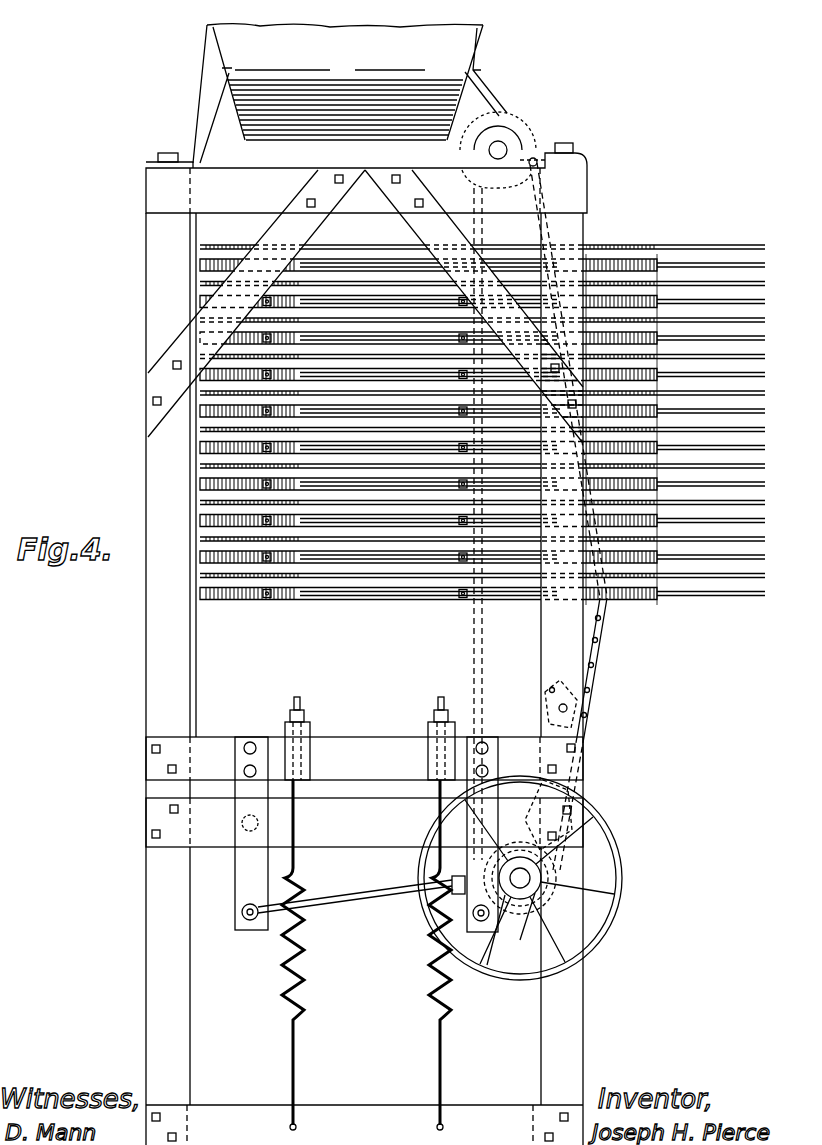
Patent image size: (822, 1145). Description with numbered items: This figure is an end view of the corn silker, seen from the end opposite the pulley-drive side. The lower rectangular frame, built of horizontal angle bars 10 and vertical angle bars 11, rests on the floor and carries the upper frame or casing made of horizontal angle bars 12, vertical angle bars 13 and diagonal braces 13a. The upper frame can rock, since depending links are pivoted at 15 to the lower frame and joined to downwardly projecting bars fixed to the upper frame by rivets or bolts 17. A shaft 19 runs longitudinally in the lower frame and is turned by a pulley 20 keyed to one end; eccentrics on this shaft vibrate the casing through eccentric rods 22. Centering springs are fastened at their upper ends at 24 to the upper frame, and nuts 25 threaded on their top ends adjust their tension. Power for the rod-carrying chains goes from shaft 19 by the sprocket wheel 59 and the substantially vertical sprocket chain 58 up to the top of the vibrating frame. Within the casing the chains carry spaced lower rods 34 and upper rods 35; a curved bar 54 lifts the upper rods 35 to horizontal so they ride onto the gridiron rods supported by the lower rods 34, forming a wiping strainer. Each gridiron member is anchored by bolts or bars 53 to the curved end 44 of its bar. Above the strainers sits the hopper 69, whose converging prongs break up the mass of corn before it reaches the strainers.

The hopper 69 is at (230, 60).
The curved end of bar 44 is at (518, 290).
The horizontal angle bars 12 is at (366, 461).
The vertical angle bars 13 is at (364, 475).
The braces 13a is at (365, 306).
The curved bar 54 is at (358, 258).
The upper rods 35 is at (706, 590).
The lower rods 34 is at (733, 586).
The bolts or bars 53 is at (270, 603).
The sprocket chain 58 is at (598, 630).
The horizontal angle bars 10 is at (364, 971).
The vertical angle bars 11 is at (364, 941).
The spring upper fastening 24 is at (310, 722).
The nuts 25 is at (303, 716).
The rivets or bolts 17 is at (244, 770).
The pivot 15 is at (242, 826).
The eccentric rods 22 is at (345, 896).
The pulley 20 is at (620, 884).
The sprocket wheel 59 is at (560, 800).
The shaft 19 is at (523, 903).